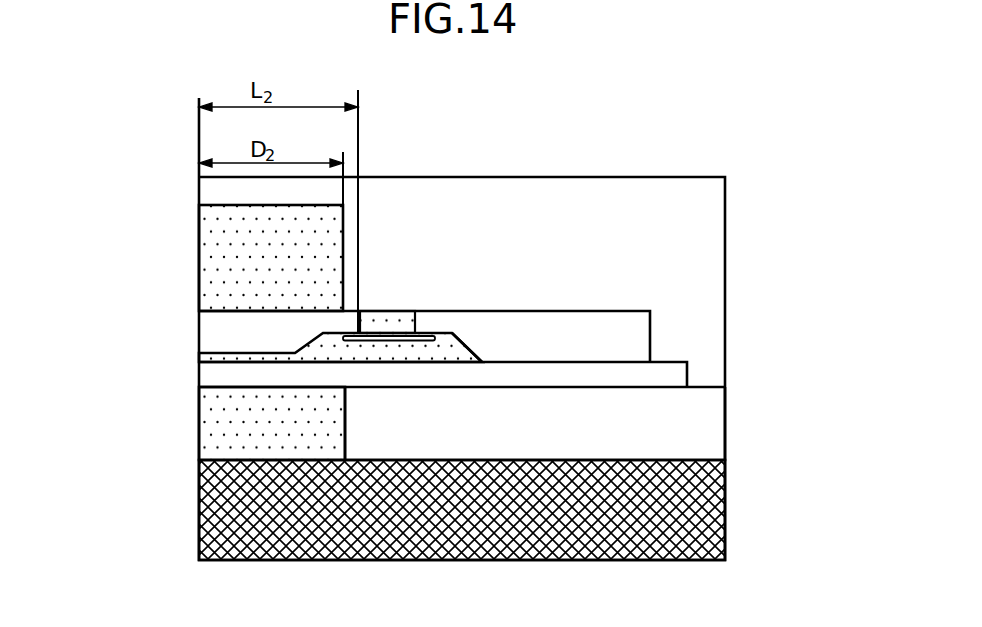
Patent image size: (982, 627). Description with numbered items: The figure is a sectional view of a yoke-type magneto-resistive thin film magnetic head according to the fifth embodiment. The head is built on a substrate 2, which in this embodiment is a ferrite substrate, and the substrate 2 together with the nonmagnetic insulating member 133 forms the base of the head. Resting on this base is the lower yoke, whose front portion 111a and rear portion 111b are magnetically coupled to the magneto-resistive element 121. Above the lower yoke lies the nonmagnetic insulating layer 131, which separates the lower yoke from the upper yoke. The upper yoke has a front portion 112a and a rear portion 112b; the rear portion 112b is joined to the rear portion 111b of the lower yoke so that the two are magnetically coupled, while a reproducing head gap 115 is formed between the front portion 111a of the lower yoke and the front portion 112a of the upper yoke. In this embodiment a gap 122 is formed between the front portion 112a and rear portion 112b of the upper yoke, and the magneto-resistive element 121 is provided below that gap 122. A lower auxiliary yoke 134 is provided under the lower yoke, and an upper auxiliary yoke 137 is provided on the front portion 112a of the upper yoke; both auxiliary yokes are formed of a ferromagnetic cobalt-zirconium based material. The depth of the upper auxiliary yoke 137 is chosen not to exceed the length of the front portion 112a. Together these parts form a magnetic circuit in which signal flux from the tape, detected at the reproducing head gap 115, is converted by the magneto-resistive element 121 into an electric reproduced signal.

The substrate 2 is at (708, 500).
The front portion of the lower yoke 111a is at (222, 377).
The rear portion of the lower yoke 111b is at (672, 376).
The front portion of the upper yoke 112a is at (226, 323).
The rear portion of the upper yoke 112b is at (640, 318).
The reproducing head gap 115 is at (215, 357).
The magneto-resistive element 121 is at (380, 325).
The gap 122 is at (398, 337).
The nonmagnetic insulating layer 131 is at (452, 355).
The nonmagnetic insulating member 133 is at (703, 422).
The lower auxiliary yoke 134 is at (218, 424).
The upper auxiliary yoke 137 is at (199, 213).